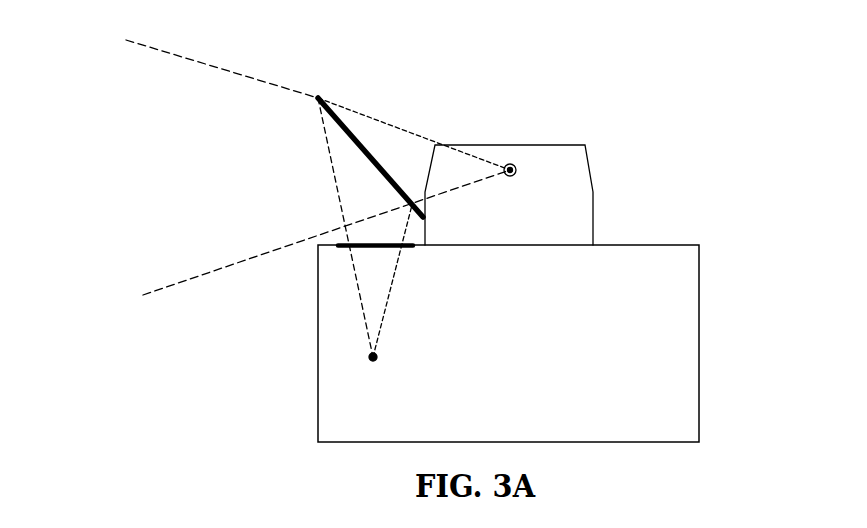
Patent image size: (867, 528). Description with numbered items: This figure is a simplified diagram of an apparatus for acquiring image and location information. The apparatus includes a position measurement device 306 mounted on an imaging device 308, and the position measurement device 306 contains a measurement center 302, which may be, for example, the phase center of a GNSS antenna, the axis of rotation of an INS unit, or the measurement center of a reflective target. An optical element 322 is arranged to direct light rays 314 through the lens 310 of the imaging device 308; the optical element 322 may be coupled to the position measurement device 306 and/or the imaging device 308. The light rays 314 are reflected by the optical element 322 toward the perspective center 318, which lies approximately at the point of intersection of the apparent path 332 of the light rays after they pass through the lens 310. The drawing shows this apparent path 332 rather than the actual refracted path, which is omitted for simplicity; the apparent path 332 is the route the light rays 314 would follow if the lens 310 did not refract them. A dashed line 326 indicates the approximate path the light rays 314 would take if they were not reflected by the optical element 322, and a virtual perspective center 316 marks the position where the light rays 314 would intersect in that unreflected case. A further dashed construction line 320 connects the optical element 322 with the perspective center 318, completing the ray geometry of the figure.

The measurement center 302 is at (516, 168).
The position measurement device 306 is at (588, 162).
The imaging device 308 is at (699, 350).
The lens 310 is at (412, 248).
The light rays 314 is at (155, 52).
The virtual perspective center 316 is at (513, 176).
The perspective center 318 is at (378, 360).
The reflected ray 320 is at (335, 173).
The optical element 322 is at (322, 97).
The dashed line 326 is at (410, 132).
The apparent path 332 is at (385, 307).